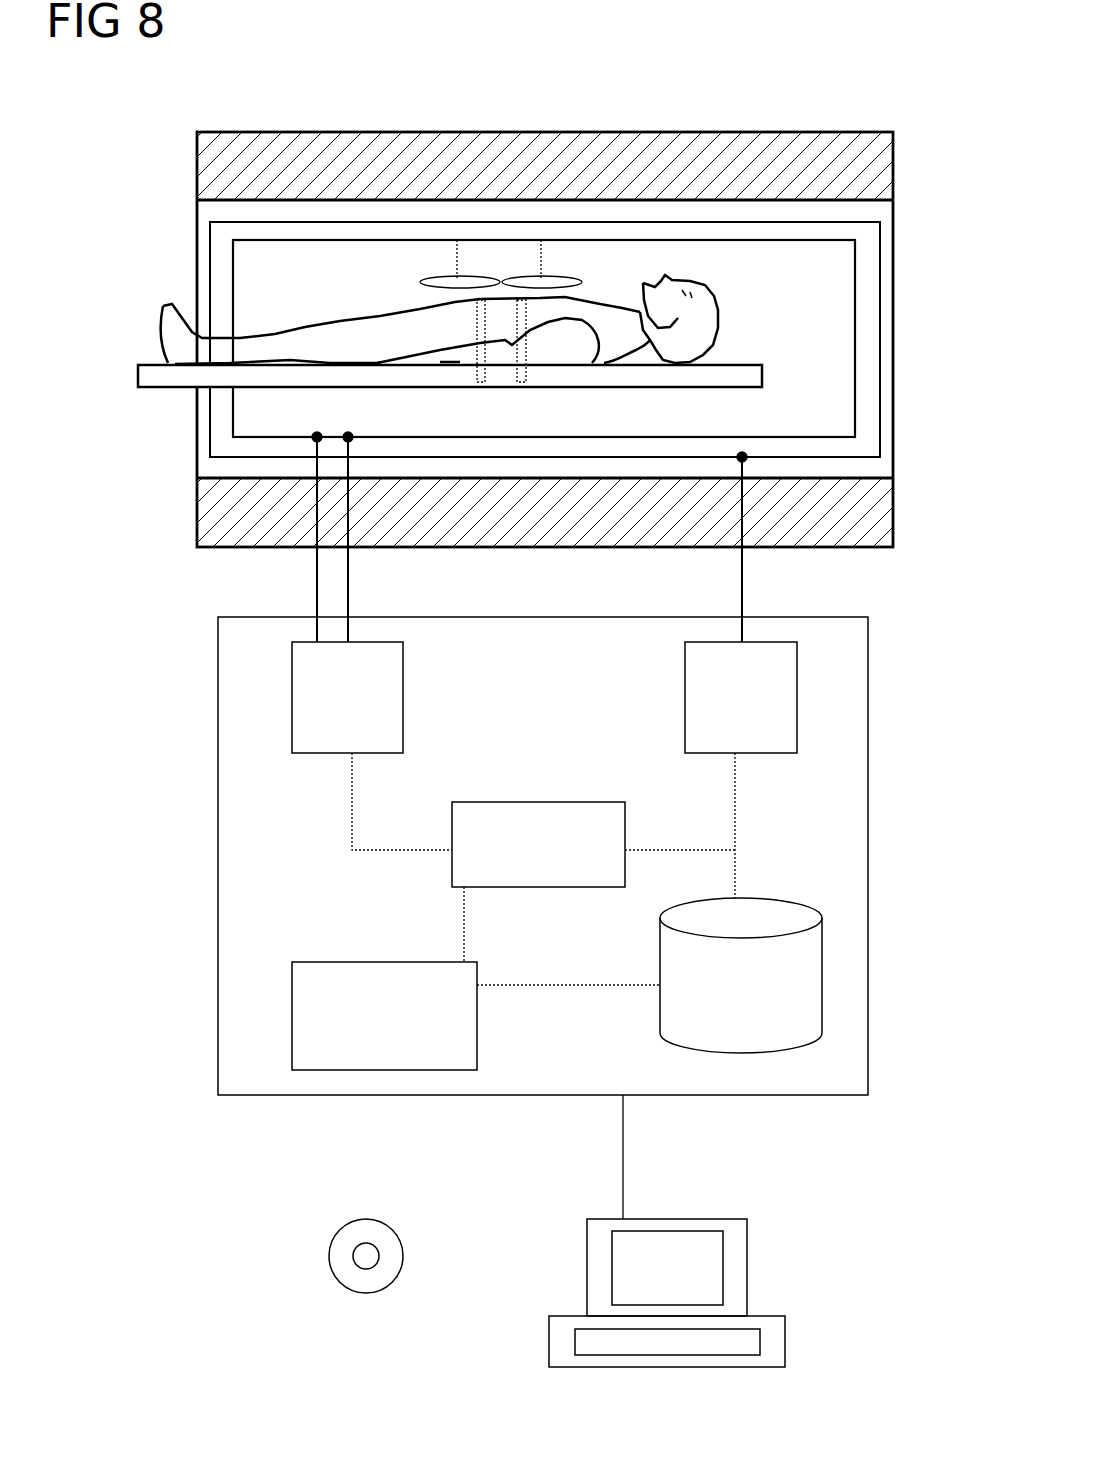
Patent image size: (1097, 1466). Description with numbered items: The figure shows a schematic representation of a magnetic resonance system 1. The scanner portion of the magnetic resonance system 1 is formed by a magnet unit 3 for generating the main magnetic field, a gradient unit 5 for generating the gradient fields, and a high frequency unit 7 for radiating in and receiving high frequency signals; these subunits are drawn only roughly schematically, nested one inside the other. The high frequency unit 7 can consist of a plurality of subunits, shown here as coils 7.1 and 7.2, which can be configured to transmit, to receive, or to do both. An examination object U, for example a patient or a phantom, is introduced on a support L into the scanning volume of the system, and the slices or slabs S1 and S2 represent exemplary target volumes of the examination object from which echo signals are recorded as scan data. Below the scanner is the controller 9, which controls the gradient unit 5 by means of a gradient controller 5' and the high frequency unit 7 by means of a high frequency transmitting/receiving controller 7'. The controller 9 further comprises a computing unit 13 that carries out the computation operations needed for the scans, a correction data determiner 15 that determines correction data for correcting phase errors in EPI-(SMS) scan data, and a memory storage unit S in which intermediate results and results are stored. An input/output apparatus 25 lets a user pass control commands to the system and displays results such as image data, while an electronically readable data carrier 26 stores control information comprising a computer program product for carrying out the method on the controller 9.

The magnetic resonance system 1 is at (802, 67).
The magnet unit 3 is at (545, 131).
The gradient unit 5 is at (583, 339).
The high frequency unit 7 is at (594, 345).
The coil 7.1 is at (458, 281).
The coil 7.2 is at (560, 266).
The examination object U is at (165, 300).
The support L is at (147, 375).
The slice S1 is at (483, 383).
The slice S2 is at (519, 383).
The controller 9 is at (543, 856).
The high frequency transmitting/receiving controller 7' is at (347, 697).
The gradient controller 5' is at (741, 697).
The computing unit 13 is at (538, 844).
The correction data determiner 15 is at (384, 1016).
The memory storage unit S is at (741, 975).
The input/output apparatus 25 is at (747, 1256).
The electronically readable data carrier 26 is at (329, 1250).